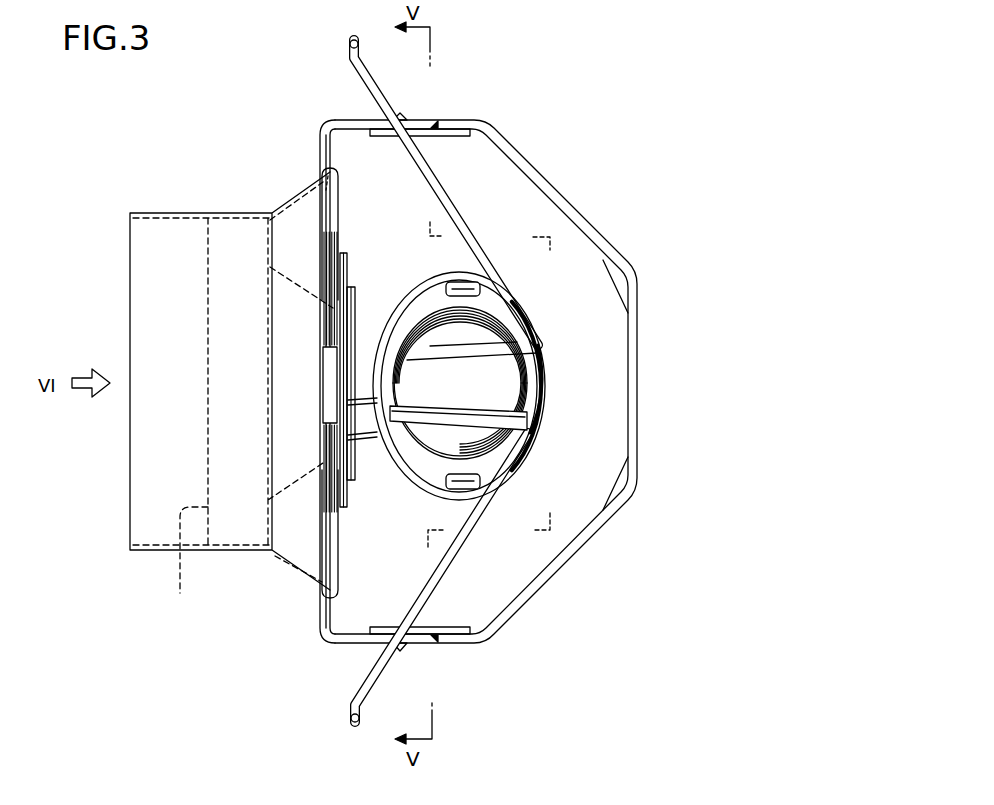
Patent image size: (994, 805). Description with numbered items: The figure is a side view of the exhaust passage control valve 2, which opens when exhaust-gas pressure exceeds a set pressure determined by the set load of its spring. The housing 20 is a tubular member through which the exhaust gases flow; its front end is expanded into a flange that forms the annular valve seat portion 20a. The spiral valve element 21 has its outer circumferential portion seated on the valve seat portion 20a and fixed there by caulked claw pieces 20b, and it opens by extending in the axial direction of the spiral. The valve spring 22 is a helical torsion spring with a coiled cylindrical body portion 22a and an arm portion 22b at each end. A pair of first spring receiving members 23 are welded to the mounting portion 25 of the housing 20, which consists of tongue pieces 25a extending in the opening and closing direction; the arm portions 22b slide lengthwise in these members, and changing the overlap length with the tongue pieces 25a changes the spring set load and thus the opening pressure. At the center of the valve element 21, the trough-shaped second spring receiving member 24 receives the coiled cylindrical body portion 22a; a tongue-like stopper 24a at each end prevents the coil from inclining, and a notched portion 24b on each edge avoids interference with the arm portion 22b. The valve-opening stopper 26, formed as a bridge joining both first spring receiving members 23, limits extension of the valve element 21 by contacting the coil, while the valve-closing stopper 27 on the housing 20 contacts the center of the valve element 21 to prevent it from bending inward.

The exhaust passage control valve 2 is at (598, 146).
The housing 20 is at (193, 213).
The valve seat portion 20a is at (323, 447).
The claw pieces 20b is at (333, 210).
The valve element 21 is at (347, 500).
The valve spring 22 is at (553, 361).
The coiled cylindrical body portion 22a is at (541, 430).
The arm portion 22b is at (378, 84).
The first spring receiving member 23 is at (370, 132).
The second spring receiving member 24 is at (413, 478).
The stopper 24a is at (480, 410).
The notched portion 24b is at (465, 290).
The mounting portion 25 is at (336, 113).
The tongue piece 25a is at (365, 122).
The valve-opening stopper 26 is at (639, 400).
The valve-closing stopper 27 is at (185, 563).